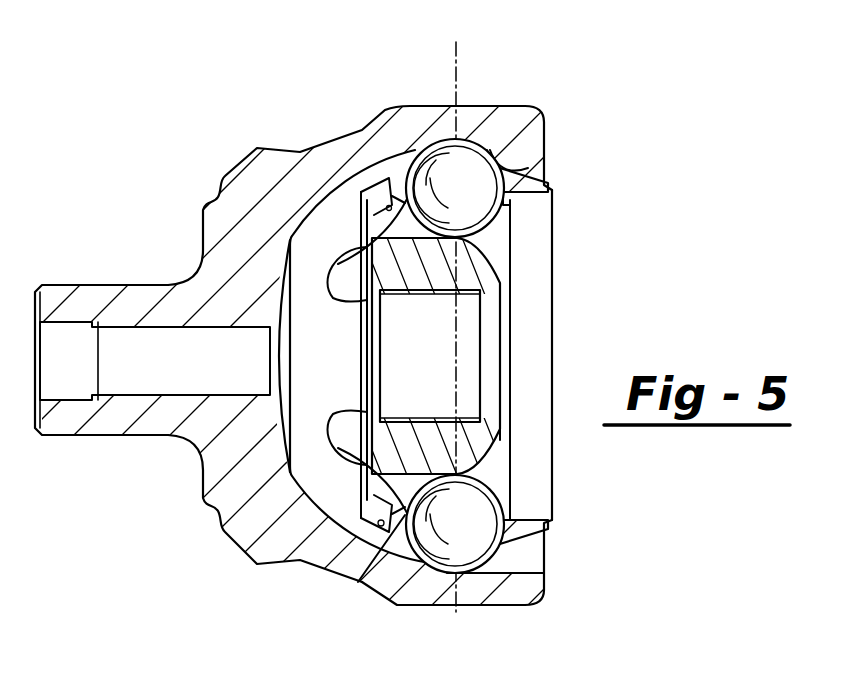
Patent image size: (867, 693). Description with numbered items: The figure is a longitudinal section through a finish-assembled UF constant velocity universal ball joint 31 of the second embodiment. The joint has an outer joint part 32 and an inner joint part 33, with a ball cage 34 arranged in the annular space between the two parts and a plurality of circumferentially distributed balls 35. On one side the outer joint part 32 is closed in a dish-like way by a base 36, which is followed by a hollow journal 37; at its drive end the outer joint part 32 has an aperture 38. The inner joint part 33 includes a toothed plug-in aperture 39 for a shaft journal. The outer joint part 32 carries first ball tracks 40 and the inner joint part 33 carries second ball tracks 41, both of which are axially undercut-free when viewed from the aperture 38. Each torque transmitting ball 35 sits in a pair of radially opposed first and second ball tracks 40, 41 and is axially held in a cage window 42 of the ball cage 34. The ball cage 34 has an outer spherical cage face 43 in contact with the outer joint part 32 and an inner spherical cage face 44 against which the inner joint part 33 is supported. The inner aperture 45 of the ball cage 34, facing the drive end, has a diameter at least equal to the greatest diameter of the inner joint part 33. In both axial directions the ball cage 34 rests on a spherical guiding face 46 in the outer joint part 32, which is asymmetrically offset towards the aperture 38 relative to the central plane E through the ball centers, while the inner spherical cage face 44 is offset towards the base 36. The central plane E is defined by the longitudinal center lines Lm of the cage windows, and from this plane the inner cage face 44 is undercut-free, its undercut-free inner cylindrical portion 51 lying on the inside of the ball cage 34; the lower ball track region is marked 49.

The constant velocity universal ball joint 31 is at (277, 112).
The outer joint part 32 is at (320, 160).
The inner joint part 33 is at (490, 263).
The ball cage 34 is at (514, 134).
The balls 35 is at (431, 150).
The base 36 is at (236, 194).
The hollow journal 37 is at (121, 300).
The aperture 38 is at (566, 158).
The toothed plug-in aperture 39 is at (467, 290).
The first ball tracks 40 is at (515, 140).
The second ball tracks 41 is at (498, 228).
The cage window 42 is at (470, 152).
The outer spherical cage face 43 is at (376, 186).
The inner spherical cage face 44 is at (391, 207).
The inner aperture 45 is at (552, 430).
The spherical guiding face 46 is at (362, 584).
The lower ball track 49 is at (398, 512).
The inner cylindrical portion 51 is at (552, 505).
The central plane E is at (503, 467).
The longitudinal center lines Lm is at (482, 314).